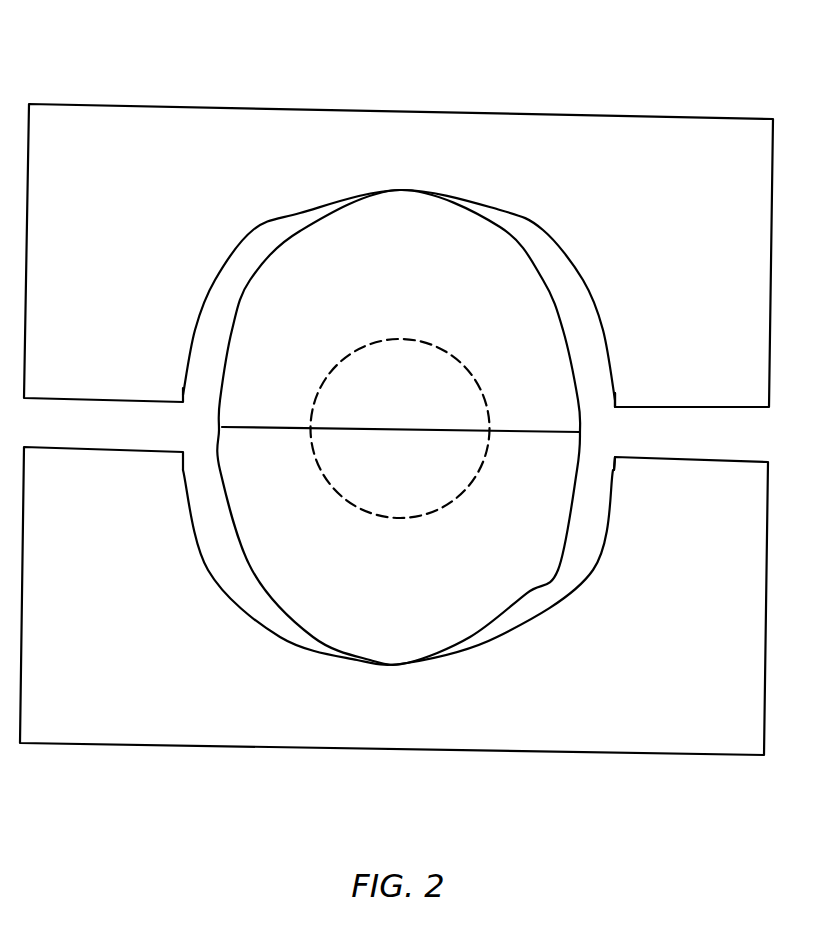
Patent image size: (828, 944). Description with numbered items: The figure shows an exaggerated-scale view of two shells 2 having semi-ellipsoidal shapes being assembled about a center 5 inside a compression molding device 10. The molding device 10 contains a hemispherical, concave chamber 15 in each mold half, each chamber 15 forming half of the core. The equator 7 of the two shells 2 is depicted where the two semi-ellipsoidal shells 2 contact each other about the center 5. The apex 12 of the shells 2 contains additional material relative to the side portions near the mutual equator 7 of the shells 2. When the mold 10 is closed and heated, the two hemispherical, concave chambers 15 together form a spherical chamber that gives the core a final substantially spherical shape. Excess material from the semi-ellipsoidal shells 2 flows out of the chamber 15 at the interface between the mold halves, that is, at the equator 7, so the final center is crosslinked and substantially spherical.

The compression molding device 10 is at (232, 102).
The apex 12 is at (405, 188).
The shells 2 is at (383, 225).
The center 5 is at (367, 403).
The equator 7 is at (508, 432).
The hemispherical, concave chamber 15 is at (593, 385).